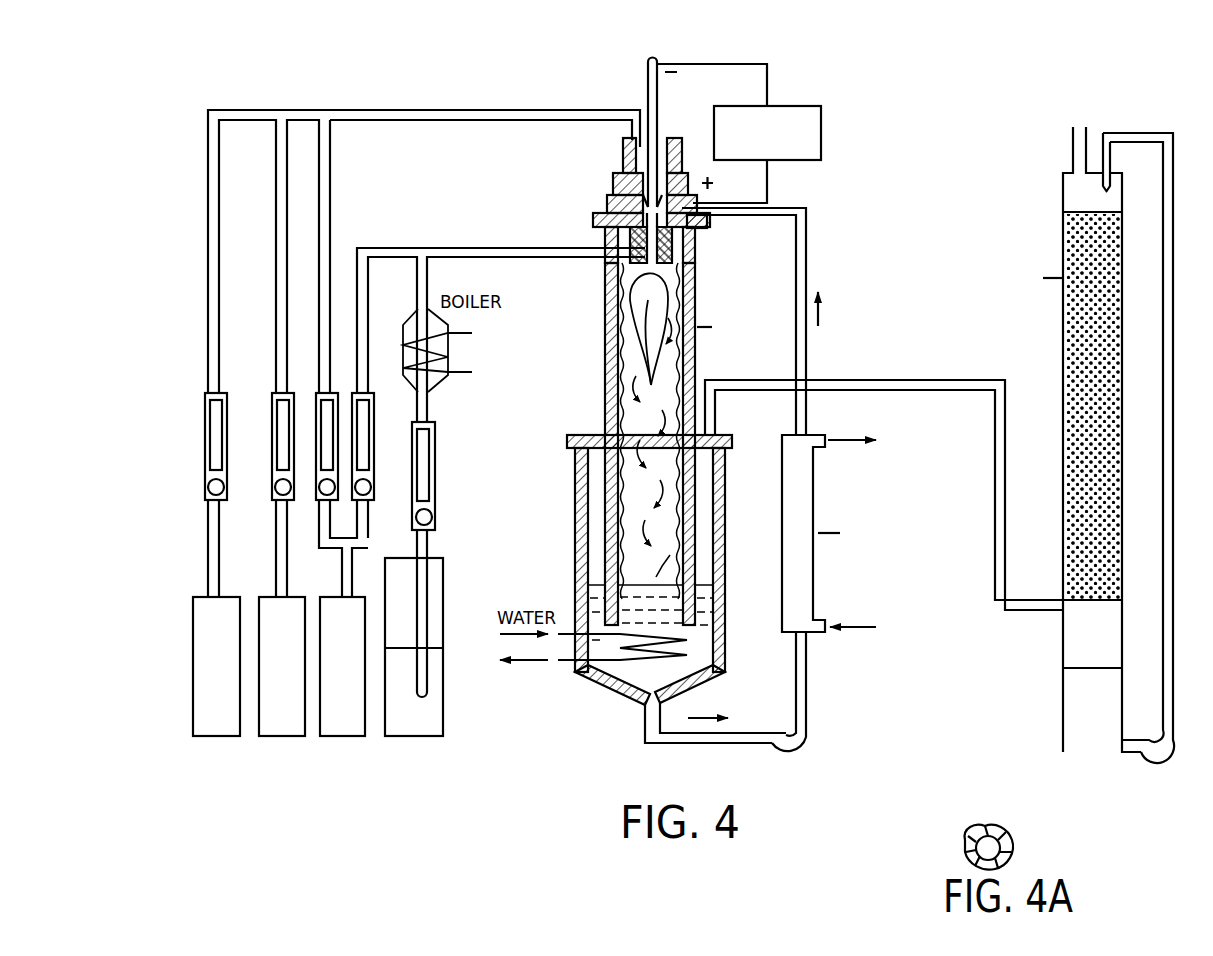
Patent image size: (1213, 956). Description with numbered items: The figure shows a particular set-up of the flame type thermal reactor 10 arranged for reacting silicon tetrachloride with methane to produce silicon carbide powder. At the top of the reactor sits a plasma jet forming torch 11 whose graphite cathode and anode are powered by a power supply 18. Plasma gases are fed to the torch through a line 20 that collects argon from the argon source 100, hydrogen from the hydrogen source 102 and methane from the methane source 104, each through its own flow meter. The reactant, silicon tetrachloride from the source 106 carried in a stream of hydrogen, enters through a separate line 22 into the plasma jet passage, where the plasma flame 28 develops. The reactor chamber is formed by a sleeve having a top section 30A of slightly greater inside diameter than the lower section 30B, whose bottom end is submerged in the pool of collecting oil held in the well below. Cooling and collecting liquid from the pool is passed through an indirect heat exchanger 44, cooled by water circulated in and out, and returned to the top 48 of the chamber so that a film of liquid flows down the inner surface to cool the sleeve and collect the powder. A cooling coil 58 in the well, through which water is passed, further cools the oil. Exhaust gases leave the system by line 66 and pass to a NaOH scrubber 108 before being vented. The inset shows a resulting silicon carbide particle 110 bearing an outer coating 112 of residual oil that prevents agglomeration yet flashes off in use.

In FIG. 4, the flame type thermal reactor 10 is at (661, 444).
In FIG. 4, the plasma jet forming torch 11 is at (608, 150).
In FIG. 4, the power supply 18 is at (822, 133).
In FIG. 4, the line 20 is at (470, 108).
In FIG. 4, the line 22 is at (500, 247).
In FIG. 4, the plasma flame 28 is at (647, 304).
In FIG. 4, the top section 30A is at (605, 352).
In FIG. 4, the lower section 30B is at (575, 513).
In FIG. 4, the indirect heat exchanger 44 is at (825, 488).
In FIG. 4, the top 48 is at (702, 232).
In FIG. 4, the cooling coil 58 is at (648, 667).
In FIG. 4, the line 66 is at (915, 380).
In FIG. 4, the argon source 100 is at (220, 738).
In FIG. 4, the hydrogen source 102 is at (343, 738).
In FIG. 4, the methane source 104 is at (284, 738).
In FIG. 4, the silicon tetrachloride source 106 is at (410, 738).
In FIG. 4, the NaOH scrubber 108 is at (1063, 242).
In FIG. 4A, the particles 110 is at (990, 845).
In FIG. 4A, the outer coating 112 is at (1000, 856).